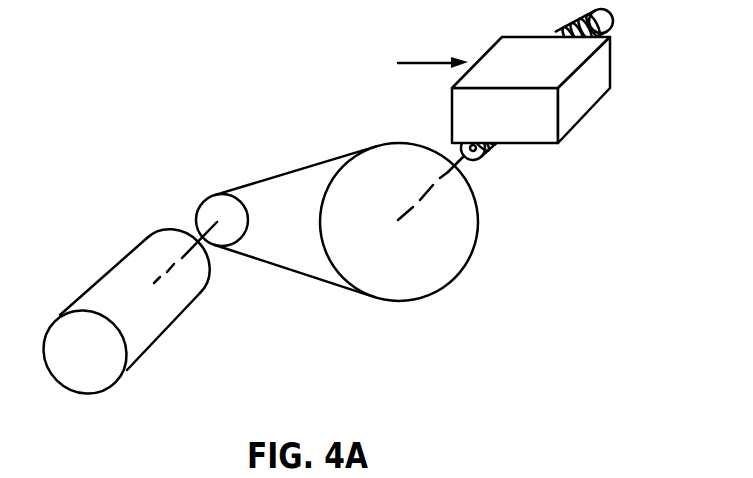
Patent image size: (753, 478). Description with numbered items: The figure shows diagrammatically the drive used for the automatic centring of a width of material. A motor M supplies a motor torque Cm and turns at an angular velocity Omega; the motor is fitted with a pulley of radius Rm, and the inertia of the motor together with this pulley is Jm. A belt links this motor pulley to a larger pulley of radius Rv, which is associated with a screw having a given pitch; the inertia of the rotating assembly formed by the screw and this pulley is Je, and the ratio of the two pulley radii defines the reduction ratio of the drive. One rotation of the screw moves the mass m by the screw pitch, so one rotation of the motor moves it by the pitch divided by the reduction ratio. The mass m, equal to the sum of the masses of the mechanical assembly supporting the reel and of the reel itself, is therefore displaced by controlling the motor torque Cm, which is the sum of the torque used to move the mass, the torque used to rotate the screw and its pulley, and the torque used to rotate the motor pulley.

The motor M is at (117, 319).
The motor torque Cm is at (204, 288).
The angular velocity of the motor Omega is at (191, 224).
The inertia of the motor fitted with the pulley Jm is at (183, 200).
The pulley with radius Rmotor Rm is at (297, 167).
The pulley with radius Rscrew Rv is at (422, 222).
The inertia of the rotating assembly of screw and pulley Je is at (498, 90).
The mass m is at (433, 46).